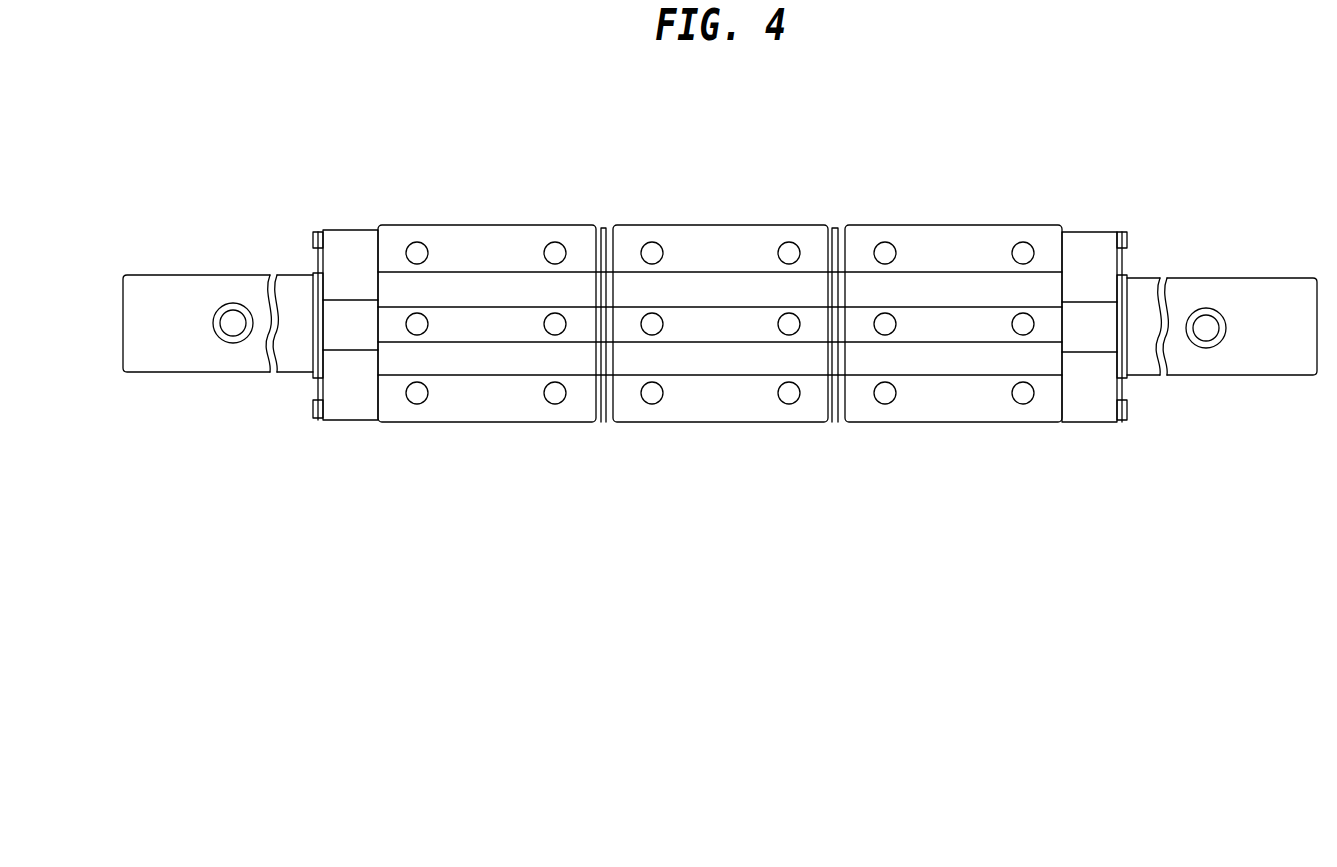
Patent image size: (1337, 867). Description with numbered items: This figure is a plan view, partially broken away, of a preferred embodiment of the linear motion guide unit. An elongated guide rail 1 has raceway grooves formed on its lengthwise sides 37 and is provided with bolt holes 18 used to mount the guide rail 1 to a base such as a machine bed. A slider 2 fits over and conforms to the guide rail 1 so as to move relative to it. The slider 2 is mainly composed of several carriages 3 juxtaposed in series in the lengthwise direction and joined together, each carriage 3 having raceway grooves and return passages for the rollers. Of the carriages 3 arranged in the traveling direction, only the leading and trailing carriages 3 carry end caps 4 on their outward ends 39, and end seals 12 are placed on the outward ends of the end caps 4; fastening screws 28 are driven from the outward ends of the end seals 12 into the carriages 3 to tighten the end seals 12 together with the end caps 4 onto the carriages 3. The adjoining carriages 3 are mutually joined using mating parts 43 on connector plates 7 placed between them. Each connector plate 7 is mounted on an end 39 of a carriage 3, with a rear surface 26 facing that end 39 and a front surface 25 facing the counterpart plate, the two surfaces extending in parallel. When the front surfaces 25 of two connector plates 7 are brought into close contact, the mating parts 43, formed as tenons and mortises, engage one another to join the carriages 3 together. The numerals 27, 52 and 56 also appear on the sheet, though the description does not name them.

The guide rail 1 is at (205, 290).
The slider 2 is at (948, 205).
The carriage 3 is at (462, 250).
The end cap 4 is at (348, 406).
The connector plate 7 is at (601, 240).
The end seal 12 is at (320, 386).
The bolt hole 18 is at (232, 328).
The front surface 25 is at (597, 296).
The rear surface 26 is at (613, 296).
The intermediate rail 27 is at (760, 228).
The fastening screw 28 is at (318, 232).
The lengthwise side 37 is at (232, 275).
The end 39 is at (375, 393).
The mating part 43 is at (604, 432).
The port opening 52 is at (552, 400).
The cover plate 56 is at (500, 250).